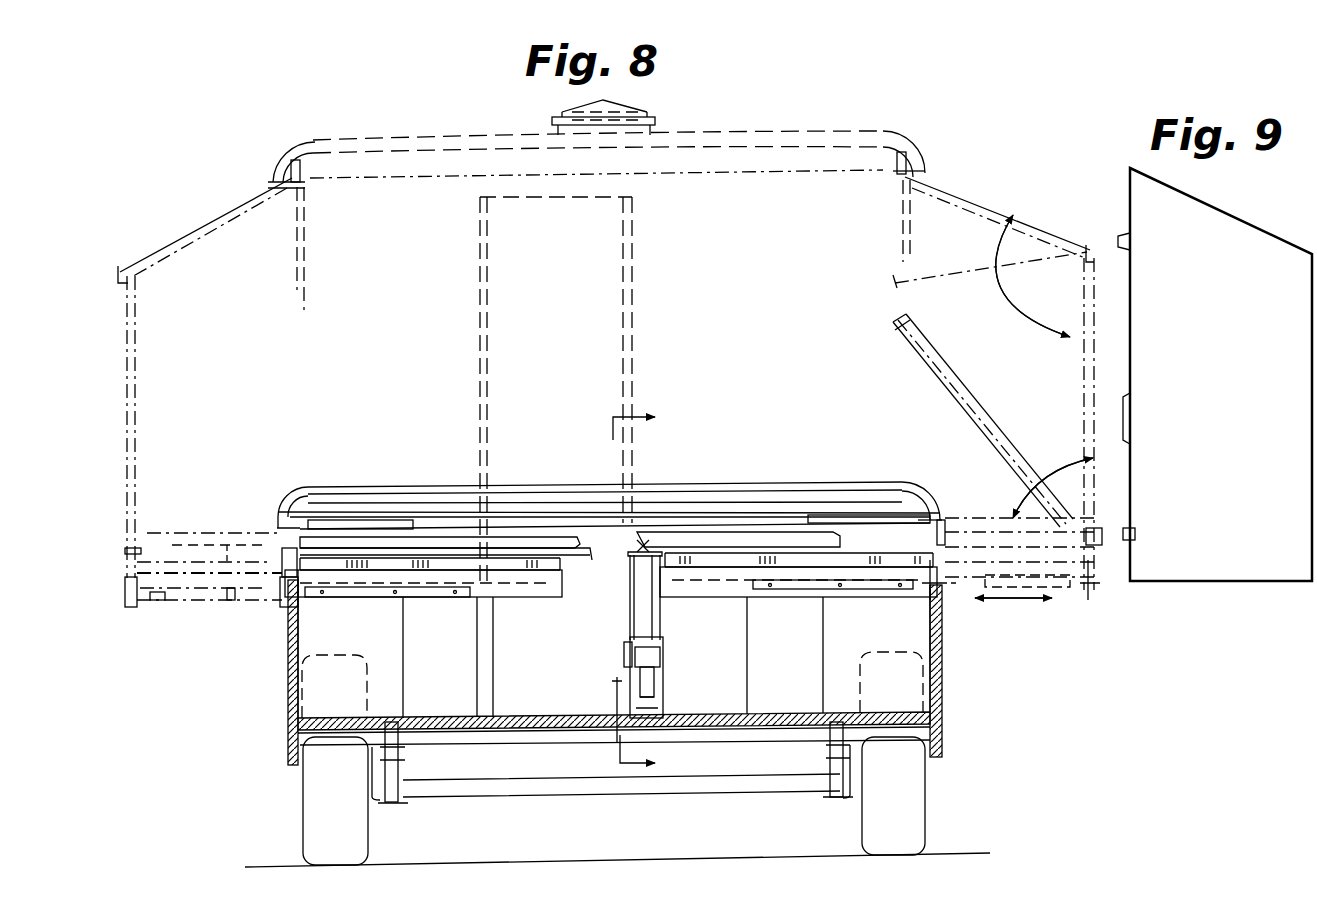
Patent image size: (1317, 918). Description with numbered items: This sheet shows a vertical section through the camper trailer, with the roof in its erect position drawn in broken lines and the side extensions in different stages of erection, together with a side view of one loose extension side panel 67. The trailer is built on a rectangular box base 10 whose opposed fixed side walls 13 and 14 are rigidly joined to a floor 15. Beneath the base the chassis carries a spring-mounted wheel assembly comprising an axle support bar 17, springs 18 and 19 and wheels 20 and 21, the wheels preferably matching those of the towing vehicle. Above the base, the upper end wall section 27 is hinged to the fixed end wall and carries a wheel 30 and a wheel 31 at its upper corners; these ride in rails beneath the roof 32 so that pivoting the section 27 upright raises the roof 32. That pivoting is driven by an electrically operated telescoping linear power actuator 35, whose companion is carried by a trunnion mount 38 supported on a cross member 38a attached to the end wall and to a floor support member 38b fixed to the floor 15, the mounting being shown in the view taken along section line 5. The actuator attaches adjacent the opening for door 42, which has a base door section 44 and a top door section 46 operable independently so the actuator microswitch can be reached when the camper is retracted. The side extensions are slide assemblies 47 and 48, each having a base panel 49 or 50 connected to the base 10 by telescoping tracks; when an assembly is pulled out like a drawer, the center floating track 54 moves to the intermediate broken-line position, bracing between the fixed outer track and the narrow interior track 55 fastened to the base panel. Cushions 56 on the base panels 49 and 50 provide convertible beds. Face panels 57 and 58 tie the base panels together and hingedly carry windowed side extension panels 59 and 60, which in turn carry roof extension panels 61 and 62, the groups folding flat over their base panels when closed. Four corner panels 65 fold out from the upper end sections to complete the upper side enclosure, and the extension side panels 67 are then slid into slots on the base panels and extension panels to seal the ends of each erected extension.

In FIG. 8, the section line 5- 5 is at (647, 596).
In FIG. 8, the rectangular box base 10 is at (960, 700).
In FIG. 8, the fixed side wall 13 is at (944, 652).
In FIG. 8, the fixed side wall 14 is at (286, 670).
In FIG. 8, the floor 15 is at (448, 718).
In FIG. 8, the axle support bar 17 is at (565, 792).
In FIG. 8, the spring 18 is at (402, 768).
In FIG. 8, the spring 19 is at (828, 762).
In FIG. 8, the wheel 20 is at (355, 838).
In FIG. 8, the wheel 21 is at (868, 820).
In FIG. 8, the upper end wall section 27 is at (716, 500).
In FIG. 8, the wheel 30 is at (302, 178).
In FIG. 8, the wheel 31 is at (896, 172).
In FIG. 8, the roof 32 is at (372, 485).
In FIG. 8, the linear power actuator 35 is at (636, 612).
In FIG. 8, the trunnion mount 38 is at (660, 657).
In FIG. 8, the cross member 38a is at (622, 656).
In FIG. 8, the floor support member 38b is at (615, 683).
In FIG. 8, the door 42 is at (636, 378).
In FIG. 8, the base door section 44 is at (522, 712).
In FIG. 8, the top door section 46 is at (615, 345).
In FIG. 8, the slide assembly 47 is at (947, 592).
In FIG. 8, the slide assembly 48 is at (122, 600).
In FIG. 8, the base panel 49 is at (930, 590).
In FIG. 8, the base panel 50 is at (305, 600).
In FIG. 8, the center floating track 54 is at (225, 605).
In FIG. 8, the narrow interior track 55 is at (180, 602).
In FIG. 8, the cushion 56 is at (172, 560).
In FIG. 8, the face panel 57 is at (945, 530).
In FIG. 8, the face panel 58 is at (288, 548).
In FIG. 8, the windowed side extension panel 59 is at (985, 395).
In FIG. 8, the windowed side extension panel 60 is at (138, 394).
In FIG. 8, the roof extension panel 61 is at (1040, 228).
In FIG. 8, the roof extension panel 62 is at (196, 228).
In FIG. 8, the corner panel 65 is at (296, 255).
In FIG. 9, the extension side panel 67 is at (1242, 568).